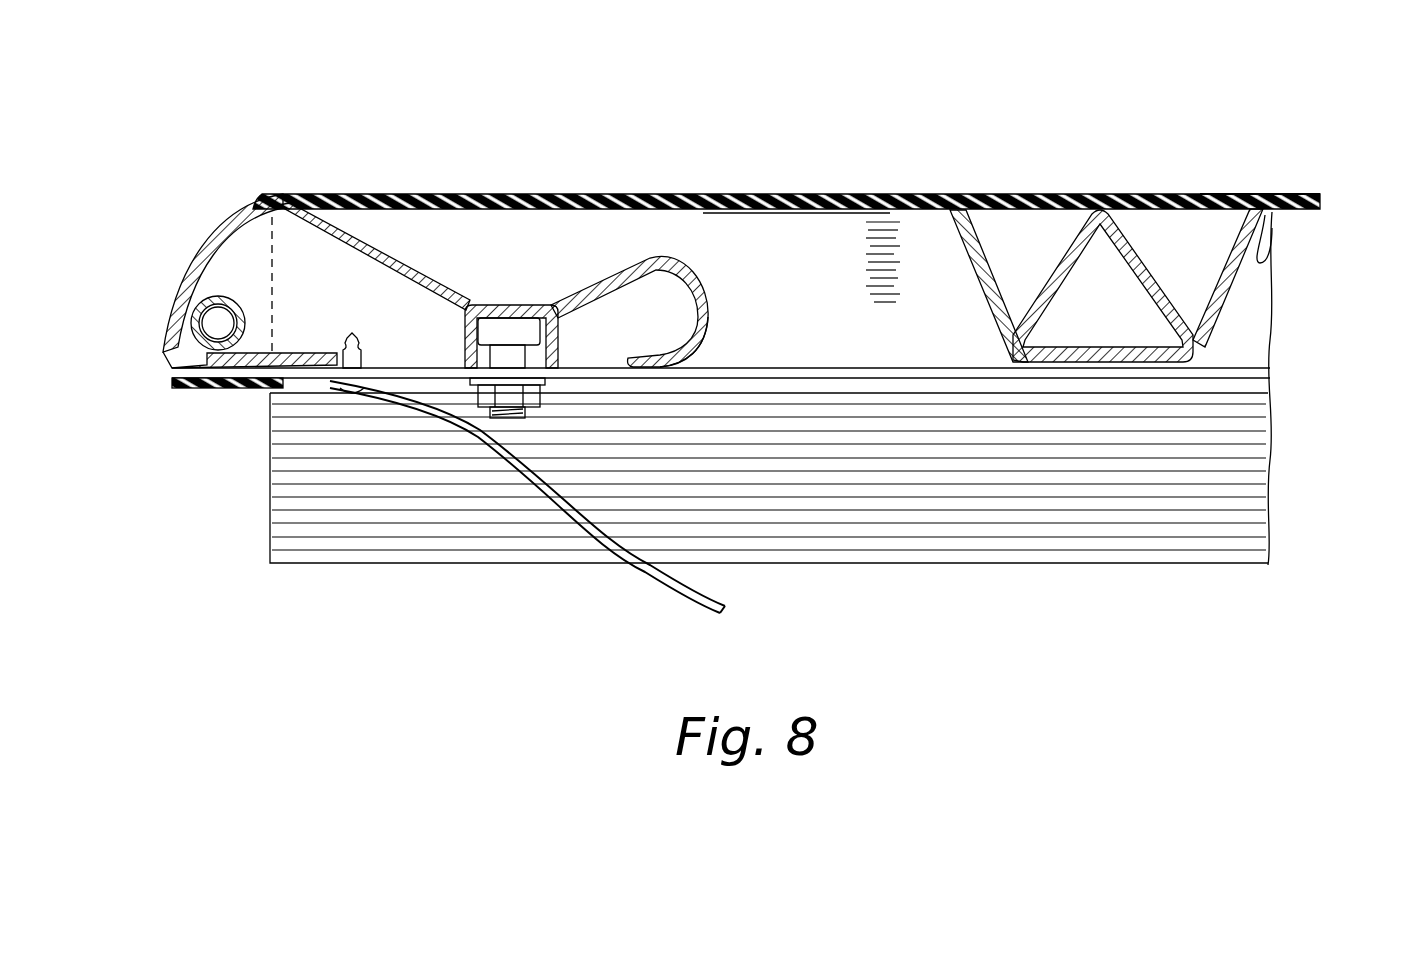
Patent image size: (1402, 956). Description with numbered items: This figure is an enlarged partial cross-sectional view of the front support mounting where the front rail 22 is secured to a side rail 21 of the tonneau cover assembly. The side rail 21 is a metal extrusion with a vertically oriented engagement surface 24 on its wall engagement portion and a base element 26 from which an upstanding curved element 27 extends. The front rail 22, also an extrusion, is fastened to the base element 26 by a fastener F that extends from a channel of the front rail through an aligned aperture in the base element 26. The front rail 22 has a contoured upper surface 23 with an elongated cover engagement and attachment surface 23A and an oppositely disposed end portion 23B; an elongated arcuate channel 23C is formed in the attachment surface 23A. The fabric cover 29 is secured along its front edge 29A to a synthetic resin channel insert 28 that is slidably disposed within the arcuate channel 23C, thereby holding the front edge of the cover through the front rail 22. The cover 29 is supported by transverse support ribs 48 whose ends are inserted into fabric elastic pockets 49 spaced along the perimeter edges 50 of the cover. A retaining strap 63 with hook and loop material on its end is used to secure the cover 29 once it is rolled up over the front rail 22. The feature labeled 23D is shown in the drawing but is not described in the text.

The side rail 21 is at (940, 268).
The front rail 22 is at (668, 243).
The contoured upper surface 23 is at (500, 248).
The cover engagement and attachment surface 23A is at (220, 250).
The end portion 23B is at (715, 300).
The arcuate channel 23C is at (527, 300).
The bead housing 23D is at (258, 308).
The engagement surface 24 is at (1228, 461).
The base element 26 is at (815, 378).
The upstanding curved element 27 is at (1243, 337).
The channel insert 28 is at (185, 330).
The fabric cover 29 is at (1210, 207).
The front edge 29A is at (158, 366).
The transverse support rib 48 is at (1180, 298).
The fabric elastic pocket 49 is at (1272, 253).
The perimeter edge 50 is at (886, 218).
The retaining strap 63 is at (613, 513).
The fastener F is at (520, 331).